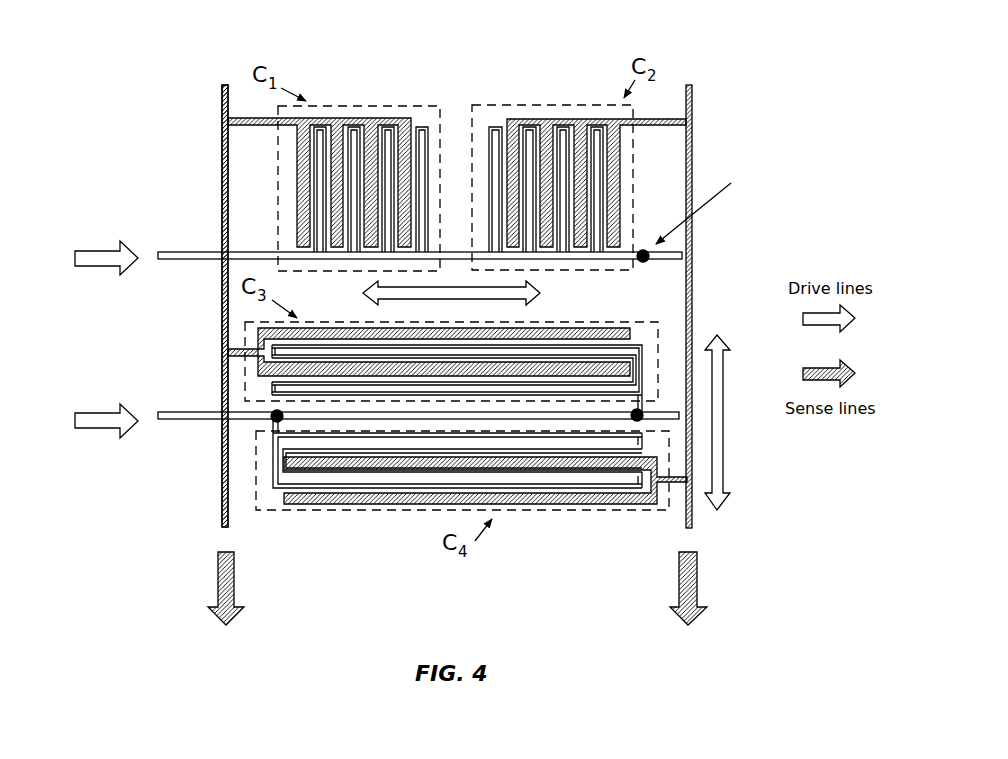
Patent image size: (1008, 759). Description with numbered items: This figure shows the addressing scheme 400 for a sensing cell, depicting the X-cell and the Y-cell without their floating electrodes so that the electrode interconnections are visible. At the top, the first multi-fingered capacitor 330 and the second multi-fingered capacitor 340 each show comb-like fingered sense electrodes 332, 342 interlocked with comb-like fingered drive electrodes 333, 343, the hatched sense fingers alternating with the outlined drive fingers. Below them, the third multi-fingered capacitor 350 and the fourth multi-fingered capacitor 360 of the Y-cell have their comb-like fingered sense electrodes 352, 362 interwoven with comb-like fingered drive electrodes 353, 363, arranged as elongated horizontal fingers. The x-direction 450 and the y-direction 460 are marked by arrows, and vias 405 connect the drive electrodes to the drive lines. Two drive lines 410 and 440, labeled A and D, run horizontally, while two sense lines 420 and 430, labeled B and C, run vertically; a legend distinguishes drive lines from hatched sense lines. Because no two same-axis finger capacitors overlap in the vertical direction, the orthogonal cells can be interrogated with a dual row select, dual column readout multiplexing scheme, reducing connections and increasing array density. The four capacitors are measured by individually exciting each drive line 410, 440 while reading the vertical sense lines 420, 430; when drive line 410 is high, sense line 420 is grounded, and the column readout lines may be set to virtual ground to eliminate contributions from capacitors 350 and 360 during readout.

The touch sensor electrode arrangement 400 is at (463, 45).
The first multi-fingered capacitor 330 is at (256, 58).
The comb-like fingered sense electrodes 332 is at (313, 128).
The comb-like fingered drive electrodes 333 is at (322, 134).
The second multi-fingered capacitor 340 is at (648, 58).
The comb-like fingered sense electrodes 342 is at (513, 128).
The comb-like fingered drive electrodes 343 is at (530, 132).
The third multi-fingered capacitor 350 is at (226, 268).
The comb-like fingered sense electrodes 352 is at (632, 332).
The comb-like fingered drive electrodes 353 is at (636, 350).
The fourth multi-fingered capacitor 360 is at (466, 560).
The comb-like fingered sense electrodes 362 is at (319, 506).
The comb-like fingered drive electrodes 363 is at (377, 482).
The vias 405 is at (728, 185).
The drive line 410 is at (100, 218).
The sense line 420 is at (222, 615).
The sense line 430 is at (694, 582).
The drive line 440 is at (87, 463).
The x-direction 450 is at (541, 297).
The y-direction 460 is at (722, 468).